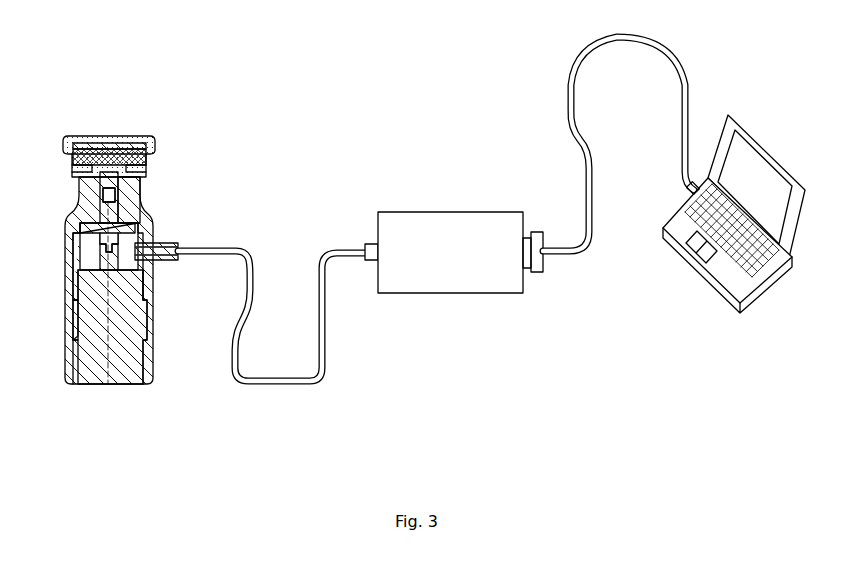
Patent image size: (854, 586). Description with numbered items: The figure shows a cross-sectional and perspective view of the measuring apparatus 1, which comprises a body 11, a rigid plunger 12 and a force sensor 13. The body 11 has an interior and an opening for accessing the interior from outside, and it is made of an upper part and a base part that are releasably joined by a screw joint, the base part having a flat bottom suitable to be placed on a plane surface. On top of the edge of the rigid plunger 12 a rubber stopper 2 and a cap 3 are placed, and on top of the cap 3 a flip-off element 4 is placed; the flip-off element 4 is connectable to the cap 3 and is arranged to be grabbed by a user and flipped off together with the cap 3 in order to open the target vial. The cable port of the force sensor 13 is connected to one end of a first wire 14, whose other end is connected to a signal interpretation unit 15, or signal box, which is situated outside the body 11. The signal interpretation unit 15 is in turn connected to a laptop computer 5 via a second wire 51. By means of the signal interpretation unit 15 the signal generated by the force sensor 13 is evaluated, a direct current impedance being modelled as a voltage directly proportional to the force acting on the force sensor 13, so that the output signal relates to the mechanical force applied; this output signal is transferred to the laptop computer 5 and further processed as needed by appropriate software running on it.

The measuring apparatus 1 is at (164, 246).
The rubber stopper 2 is at (127, 153).
The cap 3 is at (73, 167).
The flip-off element 4 is at (104, 142).
The laptop computer 5 is at (740, 288).
The body 11 is at (122, 390).
The rigid plunger 12 is at (135, 189).
The force sensor 13 is at (144, 266).
The first wire 14 is at (320, 332).
The signal interpretation unit 15 is at (513, 278).
The second wire 51 is at (682, 72).